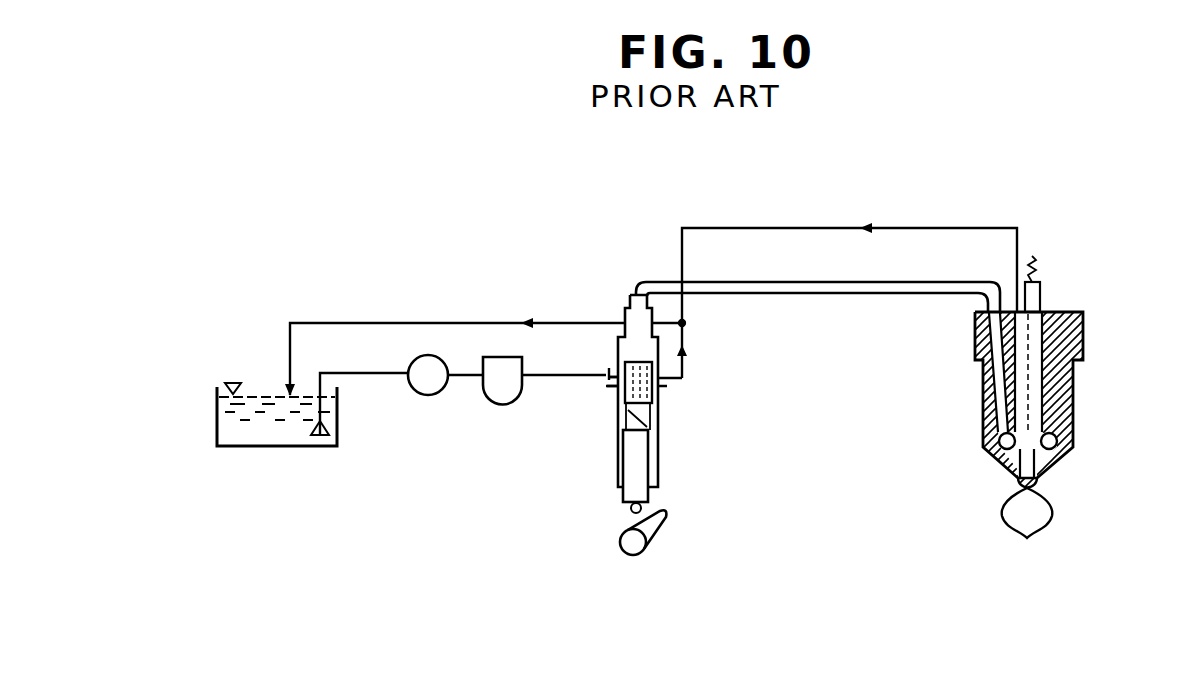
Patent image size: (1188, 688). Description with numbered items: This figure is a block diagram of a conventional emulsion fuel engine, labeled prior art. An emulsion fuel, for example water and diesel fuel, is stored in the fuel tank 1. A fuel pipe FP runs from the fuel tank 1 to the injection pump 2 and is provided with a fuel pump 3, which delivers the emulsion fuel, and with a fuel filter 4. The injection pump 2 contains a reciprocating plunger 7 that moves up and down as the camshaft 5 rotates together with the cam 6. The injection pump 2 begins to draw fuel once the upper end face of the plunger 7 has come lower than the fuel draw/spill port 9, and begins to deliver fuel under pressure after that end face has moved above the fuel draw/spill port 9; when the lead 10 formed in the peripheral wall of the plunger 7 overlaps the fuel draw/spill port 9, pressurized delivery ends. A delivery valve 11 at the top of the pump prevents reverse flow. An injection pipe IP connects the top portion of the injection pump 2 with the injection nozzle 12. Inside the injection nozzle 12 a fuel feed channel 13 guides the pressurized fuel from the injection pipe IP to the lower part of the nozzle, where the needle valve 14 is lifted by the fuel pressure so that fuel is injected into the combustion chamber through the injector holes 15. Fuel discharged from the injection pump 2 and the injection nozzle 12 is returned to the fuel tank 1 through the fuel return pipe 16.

The fuel tank 1 is at (268, 448).
The injection pump 2 is at (653, 441).
The fuel pump 3 is at (428, 395).
The fuel filter 4 is at (503, 404).
The camshaft 5 is at (632, 556).
The cam 6 is at (660, 532).
The plunger 7 is at (640, 457).
The fuel draw/spill port 9 is at (660, 378).
The lead 10 is at (642, 407).
The delivery valve 11 is at (630, 300).
The injection nozzle 12 is at (1075, 428).
The fuel feed channel 13 is at (982, 410).
The needle valve 14 is at (1085, 353).
The injector holes 15 is at (1027, 535).
The fuel return pipe 16 is at (442, 321).
The fuel pipe FP is at (565, 378).
The injection pipe IP is at (823, 295).